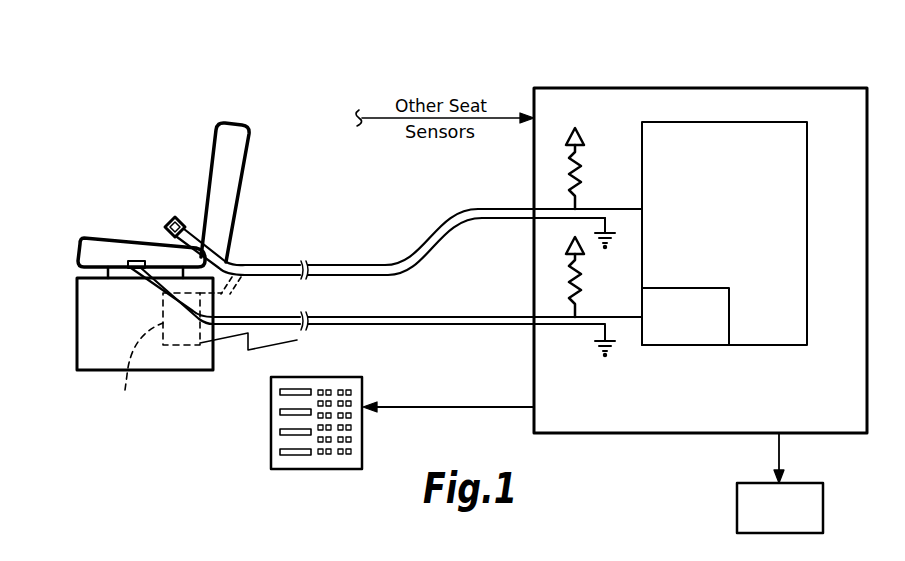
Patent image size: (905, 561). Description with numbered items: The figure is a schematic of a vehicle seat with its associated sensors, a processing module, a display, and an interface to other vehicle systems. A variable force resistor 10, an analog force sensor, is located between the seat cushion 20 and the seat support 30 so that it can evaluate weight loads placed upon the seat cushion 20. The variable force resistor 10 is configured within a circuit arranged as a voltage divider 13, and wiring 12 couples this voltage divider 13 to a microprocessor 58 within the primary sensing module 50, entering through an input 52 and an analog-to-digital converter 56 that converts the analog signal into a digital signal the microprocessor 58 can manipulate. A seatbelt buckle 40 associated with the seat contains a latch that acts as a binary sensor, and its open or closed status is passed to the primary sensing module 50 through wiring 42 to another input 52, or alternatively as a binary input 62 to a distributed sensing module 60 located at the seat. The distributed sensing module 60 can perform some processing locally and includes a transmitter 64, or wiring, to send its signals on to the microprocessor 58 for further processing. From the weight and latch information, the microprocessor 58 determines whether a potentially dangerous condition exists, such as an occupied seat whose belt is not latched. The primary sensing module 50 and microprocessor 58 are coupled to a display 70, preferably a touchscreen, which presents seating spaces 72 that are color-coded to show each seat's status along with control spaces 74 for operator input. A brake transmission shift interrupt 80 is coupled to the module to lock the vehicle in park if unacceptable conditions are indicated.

The variable force resistor 10 is at (136, 261).
The wiring 12 is at (396, 327).
The voltage divider 13 is at (565, 190).
The seat cushion 20 is at (90, 238).
The seat support 30 is at (122, 279).
The seatbelt buckle 40 is at (172, 219).
The wiring 42 is at (343, 264).
The primary sensing module 50 is at (611, 72).
The input 52 is at (642, 209).
The analog to digital converter 56 is at (729, 316).
The microprocessor 58 is at (742, 125).
The distributed sensing module 60 is at (135, 367).
The binary input 62 is at (230, 294).
The transmitter 64 is at (243, 350).
The display 70 is at (287, 483).
The seating spaces 72 is at (178, 345).
The control spaces 74 is at (280, 412).
The brake transmission shift interlock 80 is at (737, 512).